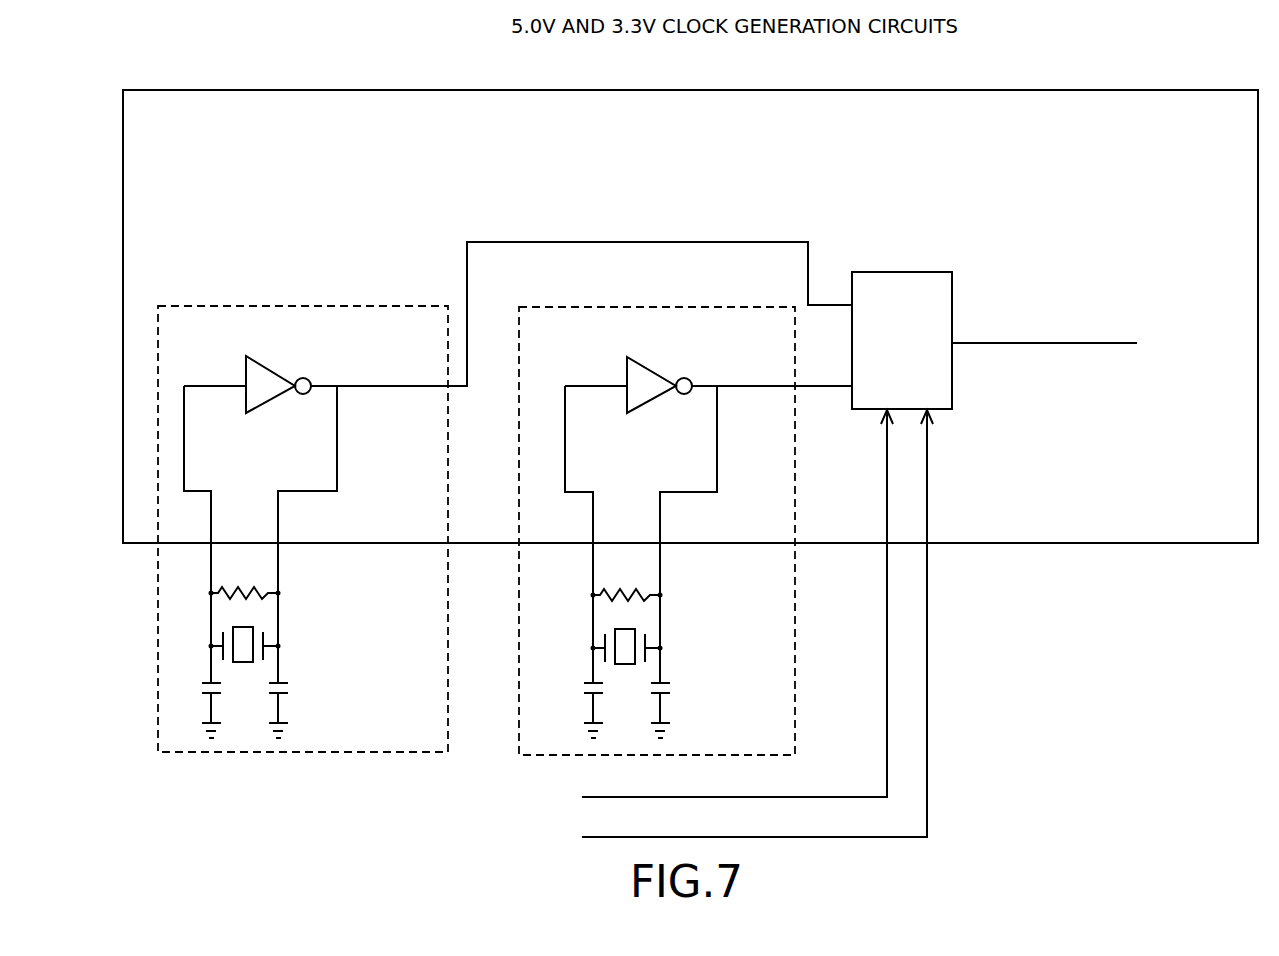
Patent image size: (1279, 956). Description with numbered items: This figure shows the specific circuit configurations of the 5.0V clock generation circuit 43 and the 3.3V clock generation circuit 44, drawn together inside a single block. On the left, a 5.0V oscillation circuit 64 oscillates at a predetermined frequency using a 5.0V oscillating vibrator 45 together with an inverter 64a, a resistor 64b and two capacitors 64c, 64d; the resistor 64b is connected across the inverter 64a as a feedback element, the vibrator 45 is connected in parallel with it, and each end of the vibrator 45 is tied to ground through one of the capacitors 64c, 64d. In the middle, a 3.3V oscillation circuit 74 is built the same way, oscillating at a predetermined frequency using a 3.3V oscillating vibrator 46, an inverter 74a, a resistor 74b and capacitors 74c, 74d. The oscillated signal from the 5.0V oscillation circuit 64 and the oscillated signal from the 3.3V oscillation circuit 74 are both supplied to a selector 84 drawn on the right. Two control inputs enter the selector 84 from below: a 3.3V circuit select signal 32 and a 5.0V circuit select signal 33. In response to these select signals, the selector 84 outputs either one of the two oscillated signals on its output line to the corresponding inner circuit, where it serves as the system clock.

The 5.0V clock generation circuit 43 is at (690, 277).
The 3.3V clock generation circuit 44 is at (400, 90).
The 5.0V oscillation circuit 64 is at (221, 304).
The inverter 64a is at (257, 413).
The resistor 64b is at (245, 577).
The capacitor 64c is at (193, 694).
The capacitor 64d is at (306, 706).
The 5.0V oscillating vibrator 45 is at (326, 621).
The 3.3V oscillation circuit 74 is at (566, 306).
The inverter 74a is at (638, 413).
The resistor 74b is at (627, 580).
The capacitor 74c is at (573, 696).
The capacitor 74d is at (687, 709).
The 3.3V oscillating vibrator 46 is at (688, 629).
The selector 84 is at (881, 272).
The 3.3V circuit select signal 32 is at (567, 609).
The 5.0V circuit select signal 33 is at (587, 629).